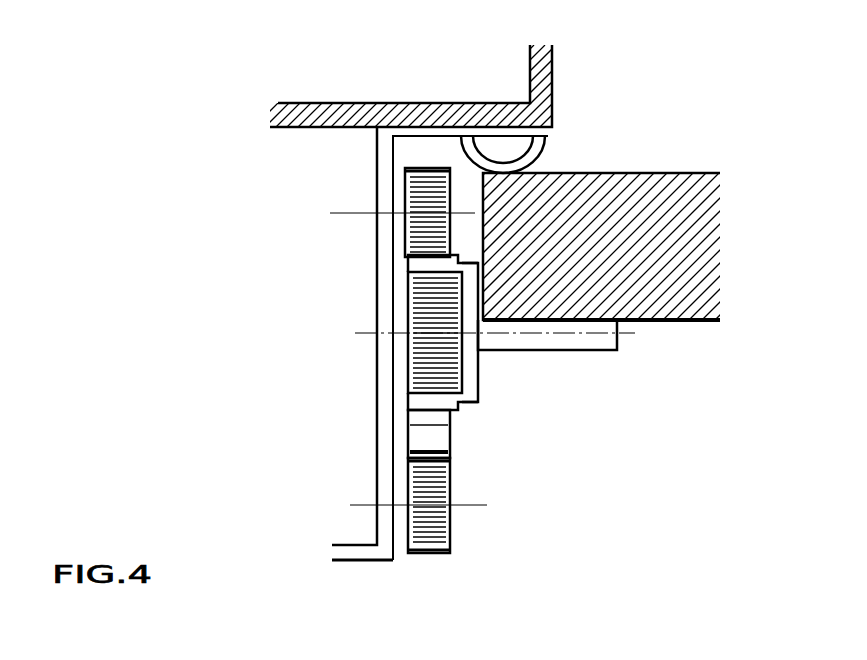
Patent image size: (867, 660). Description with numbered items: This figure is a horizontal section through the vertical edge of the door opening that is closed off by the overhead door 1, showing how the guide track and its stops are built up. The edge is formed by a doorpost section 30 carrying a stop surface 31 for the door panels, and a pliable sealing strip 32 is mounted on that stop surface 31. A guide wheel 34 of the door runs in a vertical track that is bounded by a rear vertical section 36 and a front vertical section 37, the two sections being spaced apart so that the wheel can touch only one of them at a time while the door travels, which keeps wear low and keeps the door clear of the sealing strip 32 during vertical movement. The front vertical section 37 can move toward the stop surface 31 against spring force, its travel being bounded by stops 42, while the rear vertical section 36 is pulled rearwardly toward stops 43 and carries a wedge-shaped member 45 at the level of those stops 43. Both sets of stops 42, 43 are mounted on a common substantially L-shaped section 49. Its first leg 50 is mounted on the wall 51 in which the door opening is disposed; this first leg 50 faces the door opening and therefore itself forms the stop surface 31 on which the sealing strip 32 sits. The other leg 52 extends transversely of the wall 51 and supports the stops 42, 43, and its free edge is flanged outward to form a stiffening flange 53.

The overhead door 1 is at (663, 300).
The section 30 is at (492, 64).
The stop surface 31 is at (425, 139).
The sealing strip 32 is at (532, 158).
The guide wheel 34 is at (410, 313).
The rear vertical section 36 is at (415, 395).
The front vertical section 37 is at (410, 267).
The stops 42 is at (407, 226).
The stops 43 is at (443, 533).
The wedge-shaped members 45 is at (412, 433).
The L-shaped section 49 is at (300, 188).
The first leg 50 is at (548, 134).
The wall 51 is at (366, 118).
The other leg 52 is at (382, 464).
The stiffening flange 53 is at (356, 553).